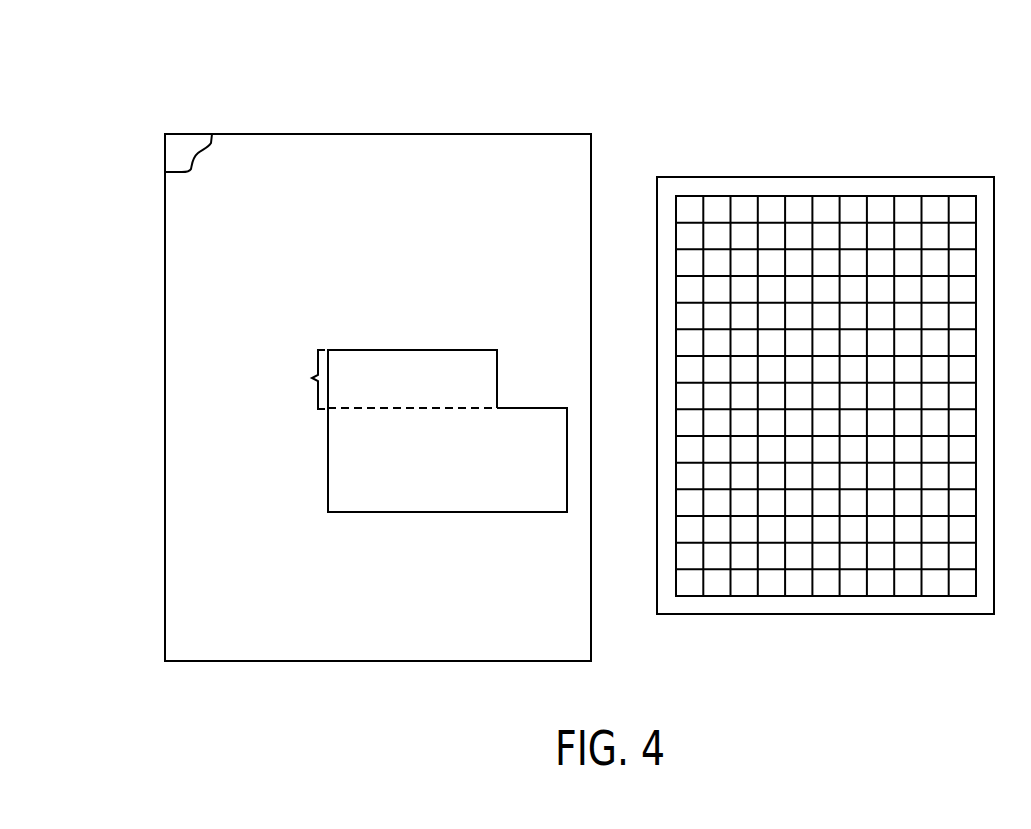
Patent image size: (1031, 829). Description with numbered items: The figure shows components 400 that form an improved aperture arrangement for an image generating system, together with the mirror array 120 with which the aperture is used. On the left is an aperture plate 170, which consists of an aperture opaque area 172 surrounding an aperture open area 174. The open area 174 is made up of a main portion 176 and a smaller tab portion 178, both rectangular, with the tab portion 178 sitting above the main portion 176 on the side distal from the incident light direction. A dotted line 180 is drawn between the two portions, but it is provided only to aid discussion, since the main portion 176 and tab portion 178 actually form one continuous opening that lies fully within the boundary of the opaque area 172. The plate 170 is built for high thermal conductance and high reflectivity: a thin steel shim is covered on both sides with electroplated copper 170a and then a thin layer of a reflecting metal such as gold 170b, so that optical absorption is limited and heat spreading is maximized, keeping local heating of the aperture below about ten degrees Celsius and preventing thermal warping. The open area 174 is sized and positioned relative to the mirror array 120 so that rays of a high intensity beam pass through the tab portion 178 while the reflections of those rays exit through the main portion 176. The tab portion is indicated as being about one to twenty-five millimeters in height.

The components 400 is at (966, 108).
The aperture plate 170 is at (350, 110).
The electroplated copper 170a is at (183, 140).
The reflecting metal 170b is at (173, 190).
The aperture opaque area 172 is at (440, 147).
The aperture open area 174 is at (432, 345).
The main portion 176 is at (525, 420).
The tab portion 178 is at (372, 358).
The dotted line 180 is at (432, 410).
The mirror array 120 is at (833, 177).